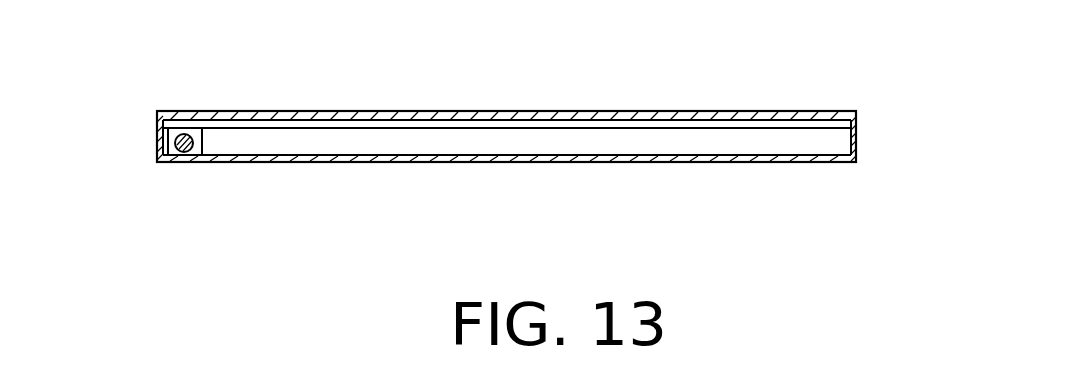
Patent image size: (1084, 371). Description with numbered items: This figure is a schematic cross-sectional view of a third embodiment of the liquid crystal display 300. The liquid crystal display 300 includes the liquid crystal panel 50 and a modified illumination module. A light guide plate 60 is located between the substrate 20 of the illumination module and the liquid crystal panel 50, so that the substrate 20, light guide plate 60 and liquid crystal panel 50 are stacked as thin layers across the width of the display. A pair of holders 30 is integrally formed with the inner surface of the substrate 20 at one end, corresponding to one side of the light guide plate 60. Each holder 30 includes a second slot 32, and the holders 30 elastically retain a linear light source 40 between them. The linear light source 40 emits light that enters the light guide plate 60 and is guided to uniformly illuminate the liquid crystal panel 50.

The liquid crystal display 300 is at (541, 67).
The substrate 20 is at (478, 162).
The holder 30 is at (163, 138).
The second slot 32 is at (183, 135).
The linear light source 40 is at (181, 152).
The liquid crystal panel 50 is at (826, 113).
The light guide plate 60 is at (817, 145).